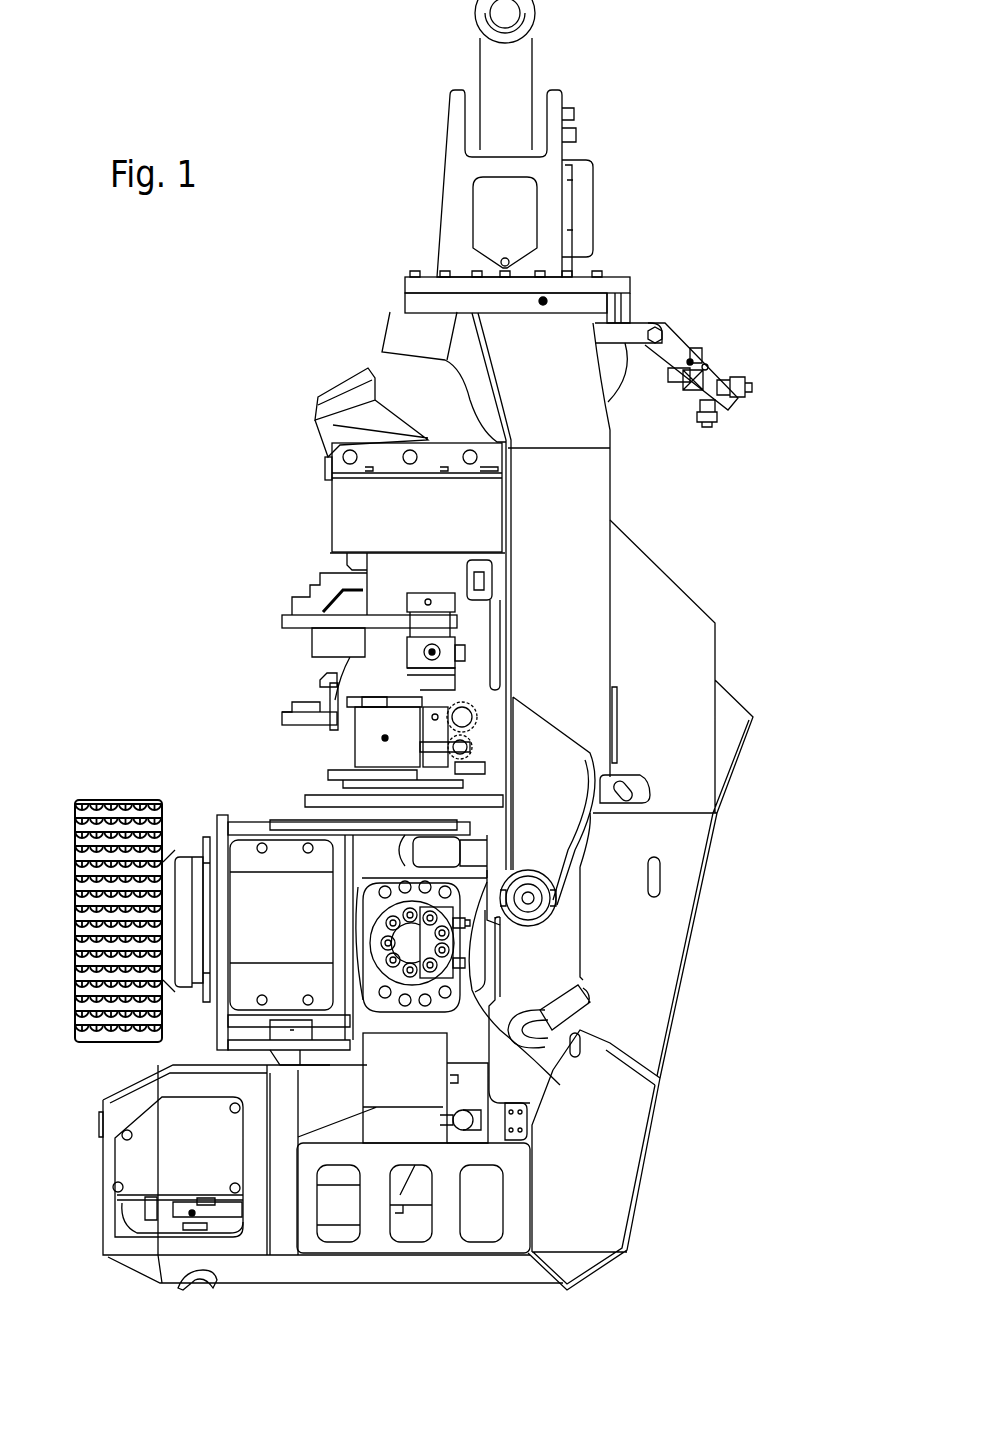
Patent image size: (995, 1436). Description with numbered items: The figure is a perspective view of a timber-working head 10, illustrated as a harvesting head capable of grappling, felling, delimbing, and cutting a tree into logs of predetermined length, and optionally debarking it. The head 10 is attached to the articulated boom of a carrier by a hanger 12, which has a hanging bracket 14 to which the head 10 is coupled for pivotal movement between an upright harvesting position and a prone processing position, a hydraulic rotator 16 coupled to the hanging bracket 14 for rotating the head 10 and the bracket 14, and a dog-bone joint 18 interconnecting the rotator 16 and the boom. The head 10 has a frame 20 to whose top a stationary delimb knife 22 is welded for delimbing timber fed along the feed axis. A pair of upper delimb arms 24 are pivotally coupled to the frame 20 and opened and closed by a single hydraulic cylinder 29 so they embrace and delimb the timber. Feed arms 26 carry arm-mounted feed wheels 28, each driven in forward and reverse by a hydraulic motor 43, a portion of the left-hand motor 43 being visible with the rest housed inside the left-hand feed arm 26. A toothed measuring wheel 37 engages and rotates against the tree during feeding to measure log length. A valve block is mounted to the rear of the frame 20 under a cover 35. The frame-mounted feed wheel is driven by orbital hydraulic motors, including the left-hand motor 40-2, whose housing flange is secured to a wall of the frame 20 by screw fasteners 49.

The timber-working head 10 is at (250, 510).
The hanger 12 is at (373, 203).
The hanging bracket 14 is at (602, 475).
The hydraulic rotator 16 is at (405, 285).
The dog-bone joint 18 is at (520, 62).
The frame 20 is at (570, 928).
The stationary delimb knife 22 is at (343, 383).
The upper delimb arms 24 is at (335, 695).
The feed arms 26 is at (262, 835).
The arm-mounted feed wheels 28 is at (100, 800).
The hydraulic cylinder 29 is at (447, 645).
The cover 35 is at (675, 608).
The toothed measuring wheel 37 is at (462, 703).
The hydraulic motor 40-2 is at (465, 985).
The hydraulic motors 43 is at (195, 862).
The fasteners 49 is at (470, 897).